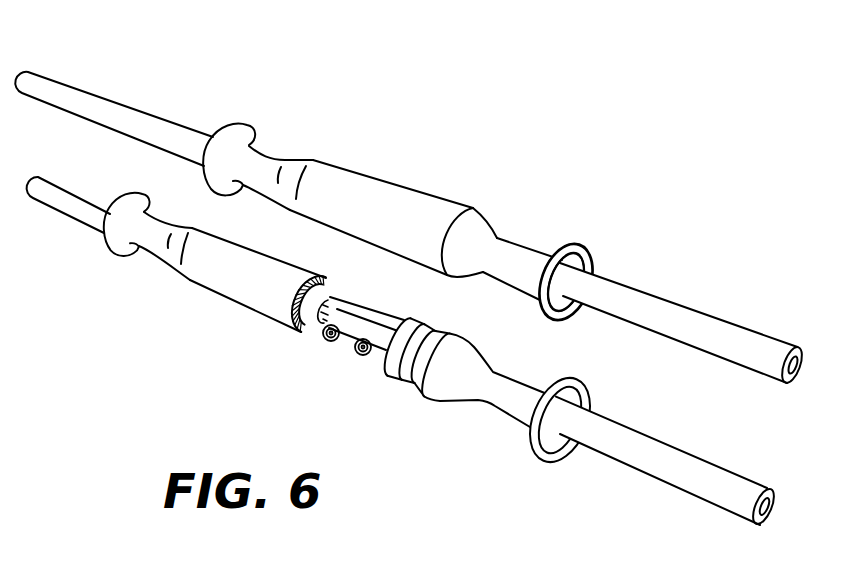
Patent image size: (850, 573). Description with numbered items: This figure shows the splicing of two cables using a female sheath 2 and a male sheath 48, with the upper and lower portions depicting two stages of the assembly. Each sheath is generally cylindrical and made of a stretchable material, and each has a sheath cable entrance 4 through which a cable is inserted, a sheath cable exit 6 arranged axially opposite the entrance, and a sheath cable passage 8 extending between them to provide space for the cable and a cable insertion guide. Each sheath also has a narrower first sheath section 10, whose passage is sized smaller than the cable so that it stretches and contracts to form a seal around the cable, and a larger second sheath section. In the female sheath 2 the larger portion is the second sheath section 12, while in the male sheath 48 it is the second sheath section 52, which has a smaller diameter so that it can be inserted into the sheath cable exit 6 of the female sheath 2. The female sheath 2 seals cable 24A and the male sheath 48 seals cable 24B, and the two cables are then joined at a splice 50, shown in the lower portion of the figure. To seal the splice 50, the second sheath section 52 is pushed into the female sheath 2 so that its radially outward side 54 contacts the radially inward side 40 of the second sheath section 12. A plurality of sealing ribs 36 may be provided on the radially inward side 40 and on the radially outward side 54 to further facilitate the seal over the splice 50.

The female sheath 2 is at (317, 237).
The second sheath section 12 is at (368, 178).
The sheath cable entrance 4 is at (227, 124).
The sheath cable exit 6 is at (473, 209).
The sheath cable passage 8 is at (330, 284).
The first sheath section 10 is at (279, 158).
The cable 24A is at (143, 108).
The cable 24B is at (665, 297).
The sealing ribs 36 is at (420, 386).
The radially inward side 40 is at (314, 336).
The male sheath 48 is at (528, 249).
The splice 50 is at (351, 348).
The second sheath section 52 is at (392, 383).
The radially outward side 54 is at (392, 381).